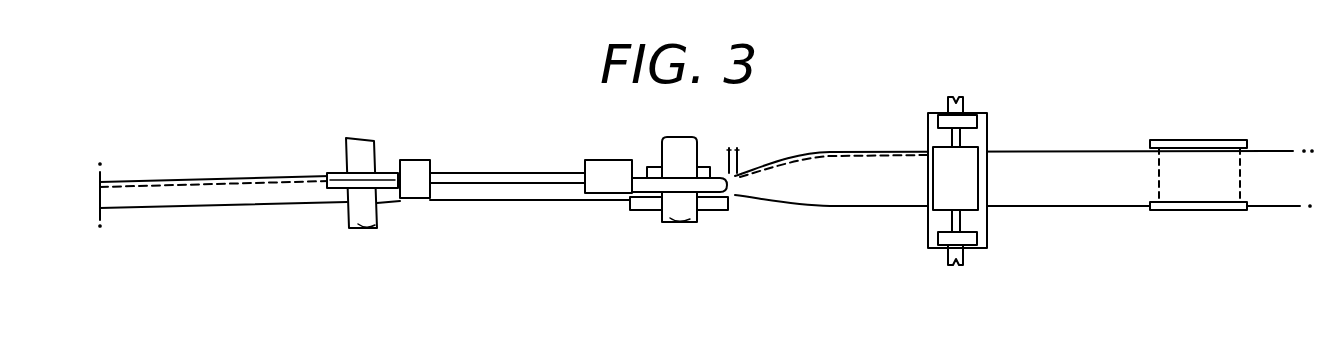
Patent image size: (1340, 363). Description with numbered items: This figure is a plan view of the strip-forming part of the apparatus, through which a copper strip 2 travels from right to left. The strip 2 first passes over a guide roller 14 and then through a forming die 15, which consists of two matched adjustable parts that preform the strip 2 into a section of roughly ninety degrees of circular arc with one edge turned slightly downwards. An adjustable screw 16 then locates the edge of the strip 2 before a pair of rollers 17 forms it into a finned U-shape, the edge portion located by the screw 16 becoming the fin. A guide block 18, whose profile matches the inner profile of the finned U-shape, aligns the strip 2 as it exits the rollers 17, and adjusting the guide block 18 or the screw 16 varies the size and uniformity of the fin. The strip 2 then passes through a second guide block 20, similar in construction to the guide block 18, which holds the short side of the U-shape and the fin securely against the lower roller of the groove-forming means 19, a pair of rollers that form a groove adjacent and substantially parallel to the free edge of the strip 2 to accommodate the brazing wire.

The copper strip 2 is at (1270, 160).
The guide roller 14 is at (1200, 140).
The forming die 15 is at (985, 128).
The adjustable screw 16 is at (740, 152).
The rollers 17 is at (710, 208).
The guide block 18 is at (603, 193).
The means for forming a groove 19 is at (382, 172).
The guide block 20 is at (430, 160).